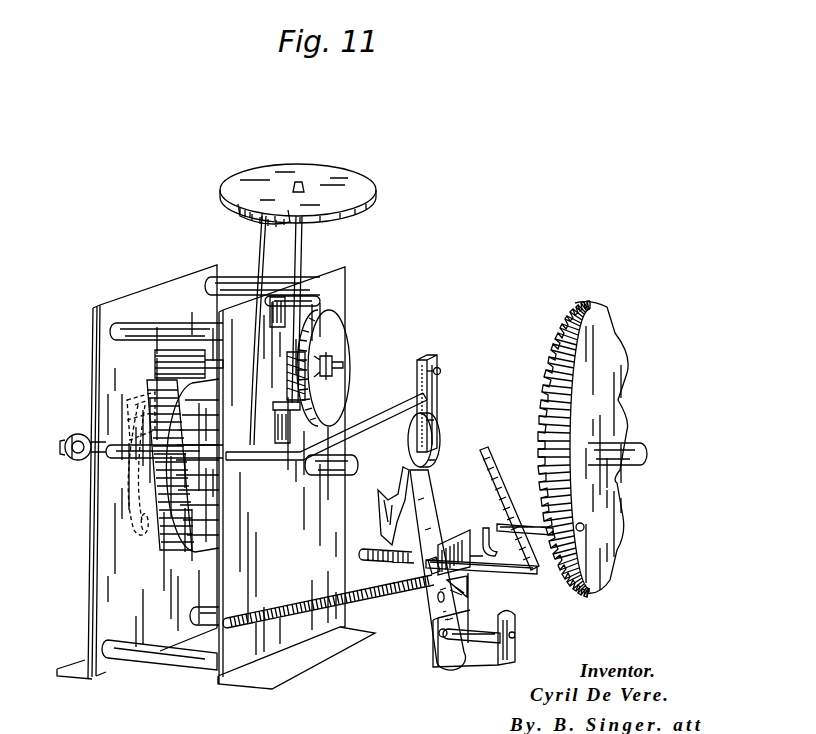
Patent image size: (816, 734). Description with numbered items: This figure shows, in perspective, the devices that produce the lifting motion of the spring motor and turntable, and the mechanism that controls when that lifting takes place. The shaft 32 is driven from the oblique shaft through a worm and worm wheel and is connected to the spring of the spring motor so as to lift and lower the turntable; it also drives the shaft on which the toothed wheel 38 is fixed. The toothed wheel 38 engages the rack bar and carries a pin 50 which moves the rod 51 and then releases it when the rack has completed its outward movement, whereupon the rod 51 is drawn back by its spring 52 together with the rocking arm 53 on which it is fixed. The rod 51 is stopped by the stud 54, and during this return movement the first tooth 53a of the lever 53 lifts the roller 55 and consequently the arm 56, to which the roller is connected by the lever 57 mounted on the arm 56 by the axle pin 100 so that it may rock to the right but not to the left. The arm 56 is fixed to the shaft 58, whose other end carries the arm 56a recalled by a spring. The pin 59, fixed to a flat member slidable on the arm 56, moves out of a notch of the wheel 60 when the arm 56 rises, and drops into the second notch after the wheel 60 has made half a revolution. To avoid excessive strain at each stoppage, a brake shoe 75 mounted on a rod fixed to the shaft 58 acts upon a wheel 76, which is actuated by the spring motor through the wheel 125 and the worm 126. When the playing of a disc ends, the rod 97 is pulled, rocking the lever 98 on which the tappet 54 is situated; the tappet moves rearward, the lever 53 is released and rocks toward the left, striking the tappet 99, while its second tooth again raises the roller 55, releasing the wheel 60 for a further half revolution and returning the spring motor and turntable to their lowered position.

The wheel 76 is at (345, 178).
The brake shoe 75 is at (261, 242).
The wheel 125 is at (334, 340).
The worm 126 is at (283, 378).
The shaft 58 is at (160, 537).
The pin 59 is at (134, 410).
The wheel 60 is at (116, 490).
The arm 56a is at (85, 437).
The arm 56 is at (371, 418).
The shaft 32 is at (356, 468).
The axle pin 100 is at (441, 368).
The lever 57 is at (437, 423).
The roller 55 is at (442, 456).
The first tooth 53a is at (383, 492).
The rocking arm 53 is at (423, 526).
The stud 54 is at (469, 597).
The rod 97 is at (376, 556).
The lever 98 is at (487, 527).
The rod 51 is at (490, 470).
The pin 50 is at (523, 524).
The toothed wheel 38 is at (598, 330).
The tappet 99 is at (440, 635).
The spring 52 is at (288, 618).